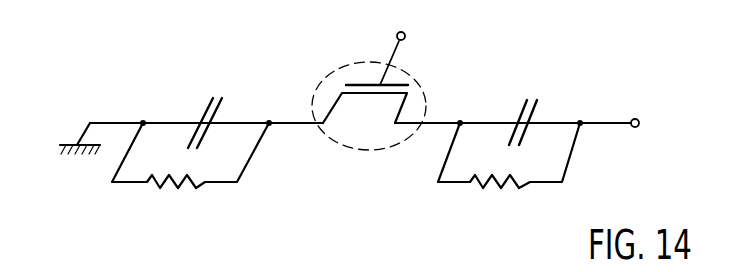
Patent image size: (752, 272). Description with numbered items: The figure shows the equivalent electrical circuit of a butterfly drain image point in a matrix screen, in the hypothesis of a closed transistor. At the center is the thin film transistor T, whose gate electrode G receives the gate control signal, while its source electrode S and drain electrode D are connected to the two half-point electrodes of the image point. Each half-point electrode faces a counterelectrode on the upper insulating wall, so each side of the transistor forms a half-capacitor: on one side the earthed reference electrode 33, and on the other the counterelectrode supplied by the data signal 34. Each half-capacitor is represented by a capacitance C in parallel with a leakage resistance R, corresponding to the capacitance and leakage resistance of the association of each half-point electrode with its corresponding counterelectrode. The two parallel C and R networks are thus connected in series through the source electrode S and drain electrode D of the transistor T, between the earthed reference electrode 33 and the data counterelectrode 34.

The earthed reference electrode 33 is at (82, 135).
The counterelectrode supplied by the data signal 34 is at (627, 115).
The capacitance C is at (203, 117).
The leakage resistance R is at (155, 188).
The thin film transistor T is at (348, 66).
The gate electrode G is at (406, 38).
The source electrode S is at (295, 127).
The drain electrode D is at (430, 127).